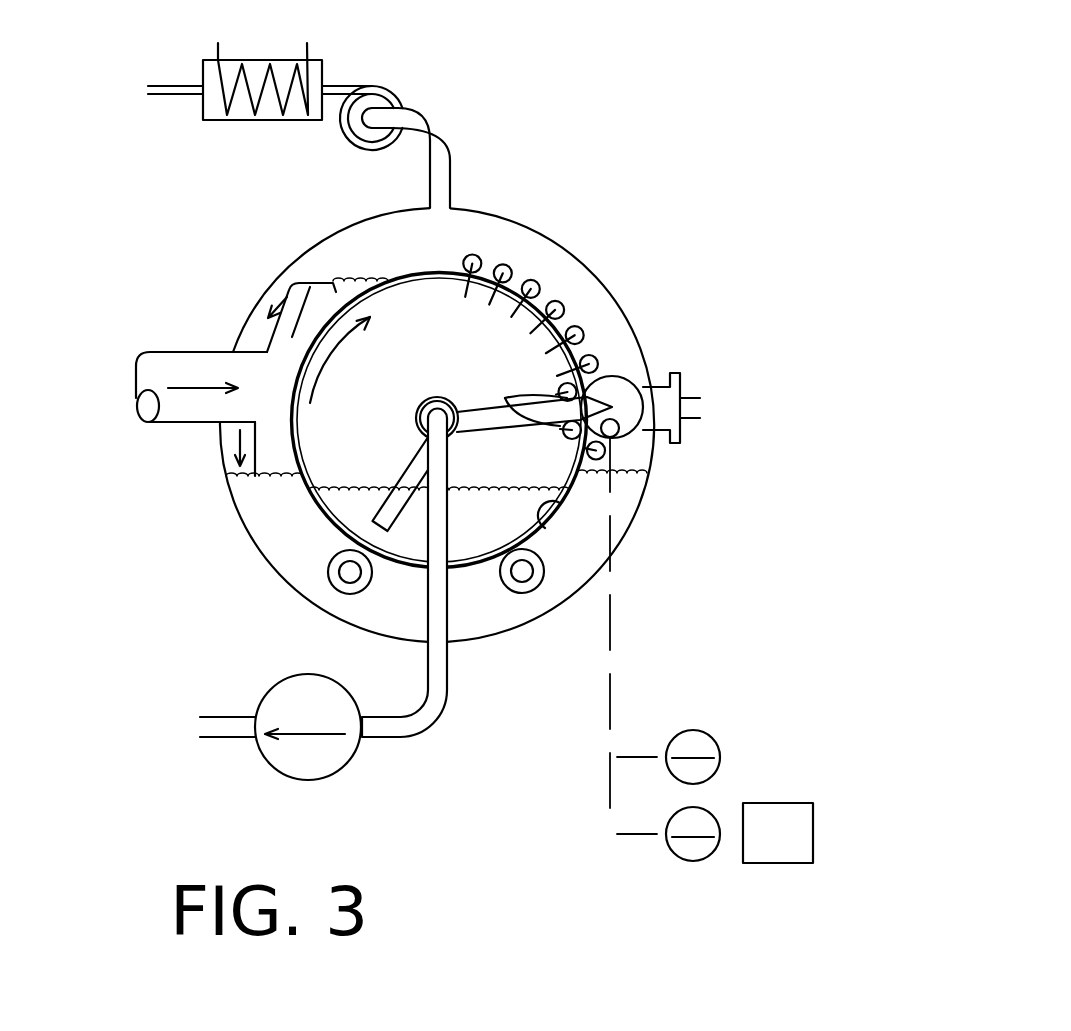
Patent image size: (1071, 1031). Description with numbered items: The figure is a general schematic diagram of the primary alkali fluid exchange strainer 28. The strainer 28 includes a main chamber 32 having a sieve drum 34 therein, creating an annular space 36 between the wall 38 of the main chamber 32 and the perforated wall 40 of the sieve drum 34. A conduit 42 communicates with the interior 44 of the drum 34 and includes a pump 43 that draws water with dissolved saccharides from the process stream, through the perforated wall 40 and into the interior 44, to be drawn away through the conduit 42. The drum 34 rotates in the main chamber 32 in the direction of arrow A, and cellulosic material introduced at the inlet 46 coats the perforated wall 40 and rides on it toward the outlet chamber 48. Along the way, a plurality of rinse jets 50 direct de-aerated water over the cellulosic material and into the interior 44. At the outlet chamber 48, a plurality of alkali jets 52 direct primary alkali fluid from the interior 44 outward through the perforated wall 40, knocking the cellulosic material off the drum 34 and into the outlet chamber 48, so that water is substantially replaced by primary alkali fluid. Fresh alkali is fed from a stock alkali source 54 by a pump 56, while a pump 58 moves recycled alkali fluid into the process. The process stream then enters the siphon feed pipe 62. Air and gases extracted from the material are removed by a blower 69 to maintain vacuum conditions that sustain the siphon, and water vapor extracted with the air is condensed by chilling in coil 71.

The primary alkali fluid exchange strainer 28 is at (645, 258).
The main chamber 32 is at (363, 217).
The sieve drum 34 is at (553, 500).
The annular space 36 is at (470, 240).
The wall 38 is at (283, 272).
The perforated wall 40 is at (465, 437).
The conduit 42 is at (453, 650).
The pump 43 is at (315, 782).
The interior 44 is at (398, 403).
The inlet 46 is at (247, 402).
The outlet chamber 48 is at (612, 407).
The rinse jets 50 is at (510, 262).
The alkali jets 52 is at (534, 396).
The stock alkali source 54 is at (783, 865).
The pump 56 is at (715, 848).
The pump 58 is at (718, 745).
The siphon feed pipe 62 is at (691, 392).
The blower 69 is at (398, 82).
The coil 71 is at (232, 53).
The arrow A is at (343, 337).